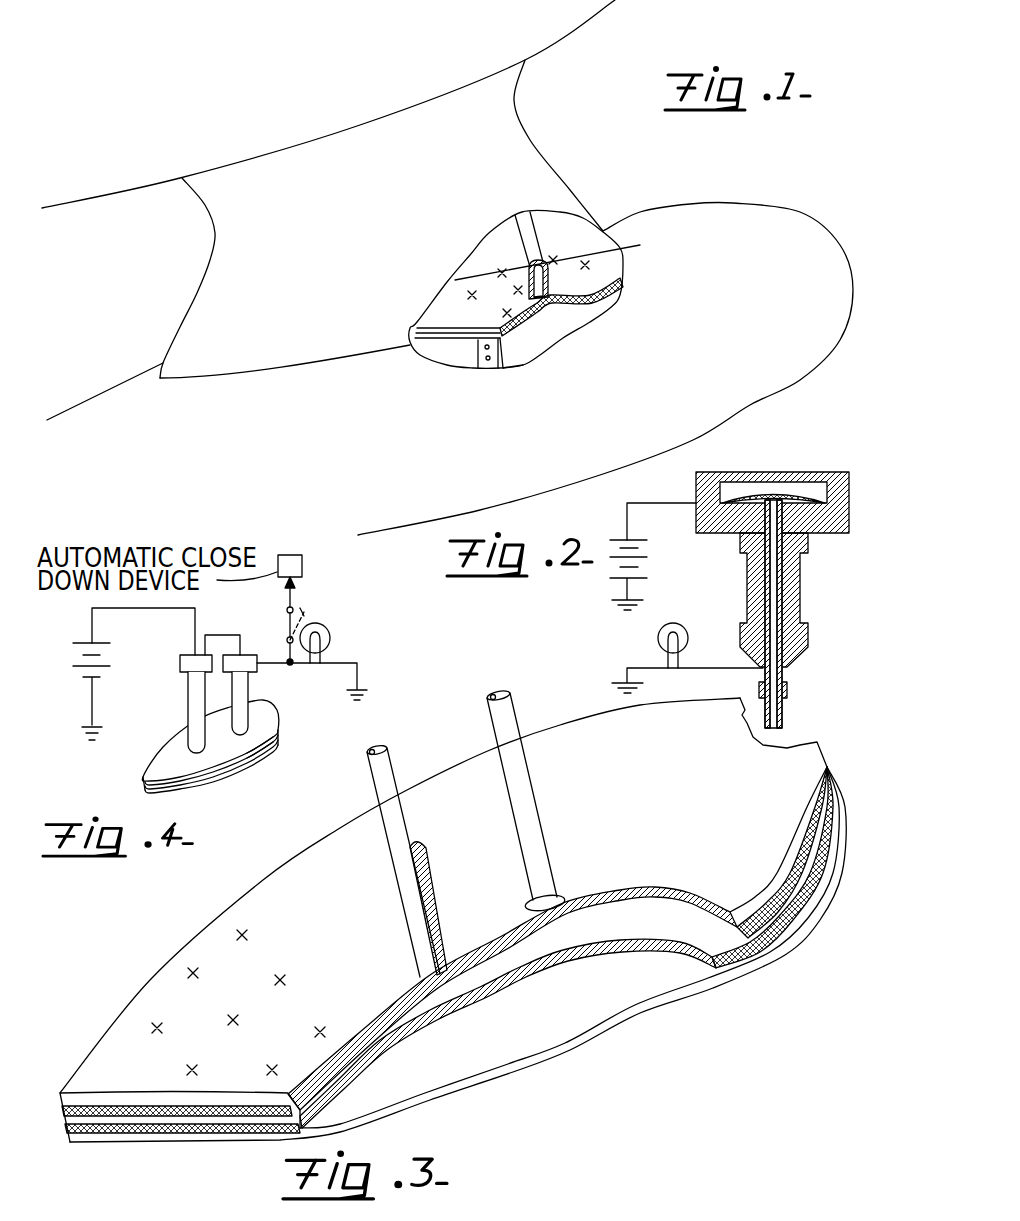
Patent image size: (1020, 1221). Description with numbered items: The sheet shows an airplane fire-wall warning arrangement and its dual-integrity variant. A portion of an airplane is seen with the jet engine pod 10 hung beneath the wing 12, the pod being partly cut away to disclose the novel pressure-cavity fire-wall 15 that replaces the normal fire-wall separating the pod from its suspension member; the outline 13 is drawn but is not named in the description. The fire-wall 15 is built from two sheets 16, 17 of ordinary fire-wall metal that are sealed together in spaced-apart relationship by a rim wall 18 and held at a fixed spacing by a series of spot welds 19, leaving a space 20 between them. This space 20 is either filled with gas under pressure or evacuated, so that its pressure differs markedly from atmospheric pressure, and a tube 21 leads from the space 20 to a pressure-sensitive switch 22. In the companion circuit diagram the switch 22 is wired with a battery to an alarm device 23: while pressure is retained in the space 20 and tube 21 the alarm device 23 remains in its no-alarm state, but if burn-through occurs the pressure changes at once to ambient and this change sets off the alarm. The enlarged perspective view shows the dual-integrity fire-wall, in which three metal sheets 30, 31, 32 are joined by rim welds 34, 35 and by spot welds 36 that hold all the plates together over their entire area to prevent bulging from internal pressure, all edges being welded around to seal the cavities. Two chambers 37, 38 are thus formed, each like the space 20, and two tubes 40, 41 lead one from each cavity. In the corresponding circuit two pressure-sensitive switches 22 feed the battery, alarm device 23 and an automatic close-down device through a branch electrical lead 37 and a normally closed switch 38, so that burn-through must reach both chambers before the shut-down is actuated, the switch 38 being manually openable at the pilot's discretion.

In FIG. 1, the engine pod 10 is at (753, 390).
In FIG. 1, the wing 12 is at (520, 142).
In FIG. 1, the fuselage upper contour 13 is at (588, 12).
In FIG. 1, the fire-wall 15 is at (617, 278).
In FIG. 1, the sheet 16 is at (566, 305).
In FIG. 1, the sheet 17 is at (535, 302).
In FIG. 1, the rim wall 18 is at (460, 343).
In FIG. 1, the spot welds 19 is at (468, 294).
In FIG. 1, the space 20 is at (523, 323).
In FIG. 1, the tube 21 is at (525, 230).
In FIG. 2, the tube 21 is at (745, 575).
In FIG. 2, the pressure-sensitive switch 22 is at (820, 533).
In FIG. 4, the pressure-sensitive switch 22 is at (180, 662).
In FIG. 2, the alarm device 23 is at (658, 638).
In FIG. 4, the alarm device 23 is at (331, 629).
In FIG. 3, the metal sheet 30 is at (612, 1040).
In FIG. 4, the metal sheet 30 is at (225, 783).
In FIG. 3, the metal sheet 31 is at (627, 953).
In FIG. 4, the metal sheet 31 is at (252, 764).
In FIG. 3, the metal sheet 32 is at (641, 889).
In FIG. 4, the metal sheet 32 is at (276, 748).
In FIG. 3, the rim weld 34 is at (88, 1110).
In FIG. 4, the rim weld 34 is at (152, 793).
In FIG. 3, the rim weld 35 is at (150, 1132).
In FIG. 4, the rim weld 35 is at (177, 790).
In FIG. 3, the spot welds 36 is at (281, 978).
In FIG. 4, the spot welds 36 is at (143, 780).
In FIG. 3, the chamber 37 is at (515, 1050).
In FIG. 4, the chamber 37 is at (293, 664).
In FIG. 3, the chamber 38 is at (593, 910).
In FIG. 4, the chamber 38 is at (297, 633).
In FIG. 3, the tube 40 is at (427, 907).
In FIG. 4, the tube 40 is at (188, 700).
In FIG. 3, the tube 41 is at (549, 851).
In FIG. 4, the tube 41 is at (248, 688).